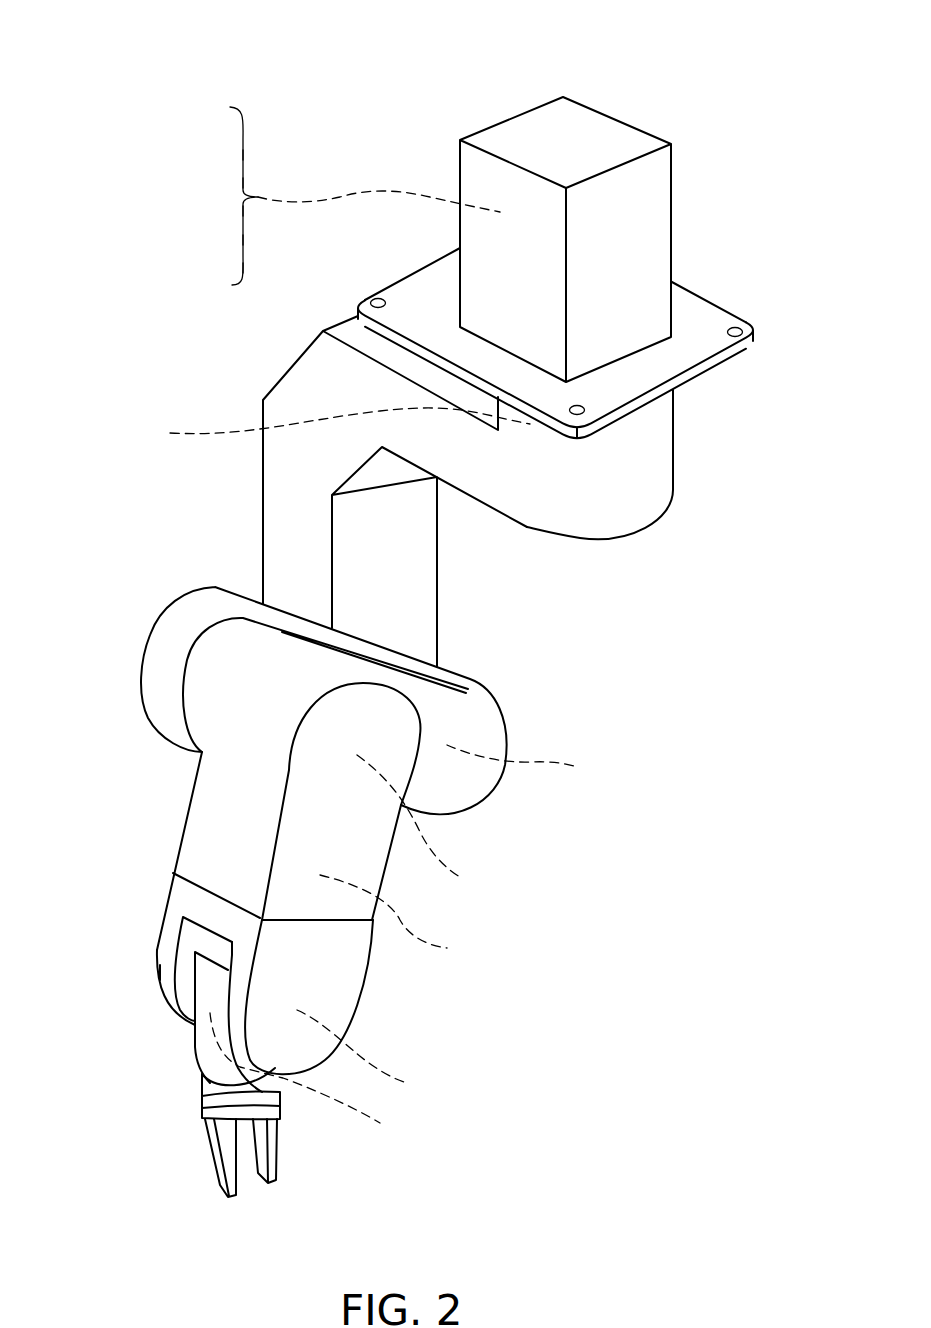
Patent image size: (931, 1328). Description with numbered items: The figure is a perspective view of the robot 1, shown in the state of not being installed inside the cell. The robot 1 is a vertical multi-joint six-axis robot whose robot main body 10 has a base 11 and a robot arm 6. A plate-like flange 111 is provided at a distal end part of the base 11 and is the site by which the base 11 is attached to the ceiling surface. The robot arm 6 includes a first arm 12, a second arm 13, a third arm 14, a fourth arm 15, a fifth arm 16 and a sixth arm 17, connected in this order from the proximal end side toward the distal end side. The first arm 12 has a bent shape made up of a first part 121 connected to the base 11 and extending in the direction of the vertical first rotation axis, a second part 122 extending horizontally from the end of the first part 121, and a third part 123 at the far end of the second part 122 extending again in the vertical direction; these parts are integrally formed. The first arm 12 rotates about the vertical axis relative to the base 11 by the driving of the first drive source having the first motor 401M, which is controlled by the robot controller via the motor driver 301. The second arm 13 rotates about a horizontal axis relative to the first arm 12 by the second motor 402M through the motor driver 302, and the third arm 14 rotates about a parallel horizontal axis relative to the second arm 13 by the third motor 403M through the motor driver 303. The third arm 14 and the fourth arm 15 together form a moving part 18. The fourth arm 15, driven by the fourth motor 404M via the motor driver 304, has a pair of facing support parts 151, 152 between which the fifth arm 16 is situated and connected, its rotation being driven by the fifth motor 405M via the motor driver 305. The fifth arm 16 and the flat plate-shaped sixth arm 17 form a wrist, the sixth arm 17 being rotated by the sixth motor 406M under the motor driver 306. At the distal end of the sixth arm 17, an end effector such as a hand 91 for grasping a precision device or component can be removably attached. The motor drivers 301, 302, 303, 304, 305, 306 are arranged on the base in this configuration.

The robot 1 is at (690, 80).
The robot main body 10 is at (696, 143).
The base 11 is at (680, 212).
The flange 111 is at (699, 348).
The first arm 12 is at (252, 489).
The first part 121 is at (642, 417).
The second part 122 is at (465, 450).
The third part 123 is at (297, 532).
The robot arm 6 is at (252, 566).
The second arm 13 is at (497, 791).
The third arm 14 is at (180, 792).
The moving part 18 is at (169, 825).
The fourth arm 15 is at (155, 900).
The support part 151 is at (164, 984).
The support part 152 is at (313, 990).
The fifth arm 16 is at (178, 1054).
The sixth arm 17 is at (190, 1089).
The hand 91 is at (200, 1164).
The motor driver 301 is at (350, 196).
The motor driver 302 is at (221, 155).
The motor driver 303 is at (221, 183).
The motor driver 304 is at (221, 211).
The motor driver 305 is at (221, 240).
The motor driver 306 is at (221, 268).
The first motor 401M is at (285, 427).
The second motor 402M is at (571, 764).
The third motor 403M is at (464, 825).
The fourth motor 404M is at (439, 920).
The fifth motor 405M is at (408, 1055).
The sixth motor 406M is at (353, 1078).